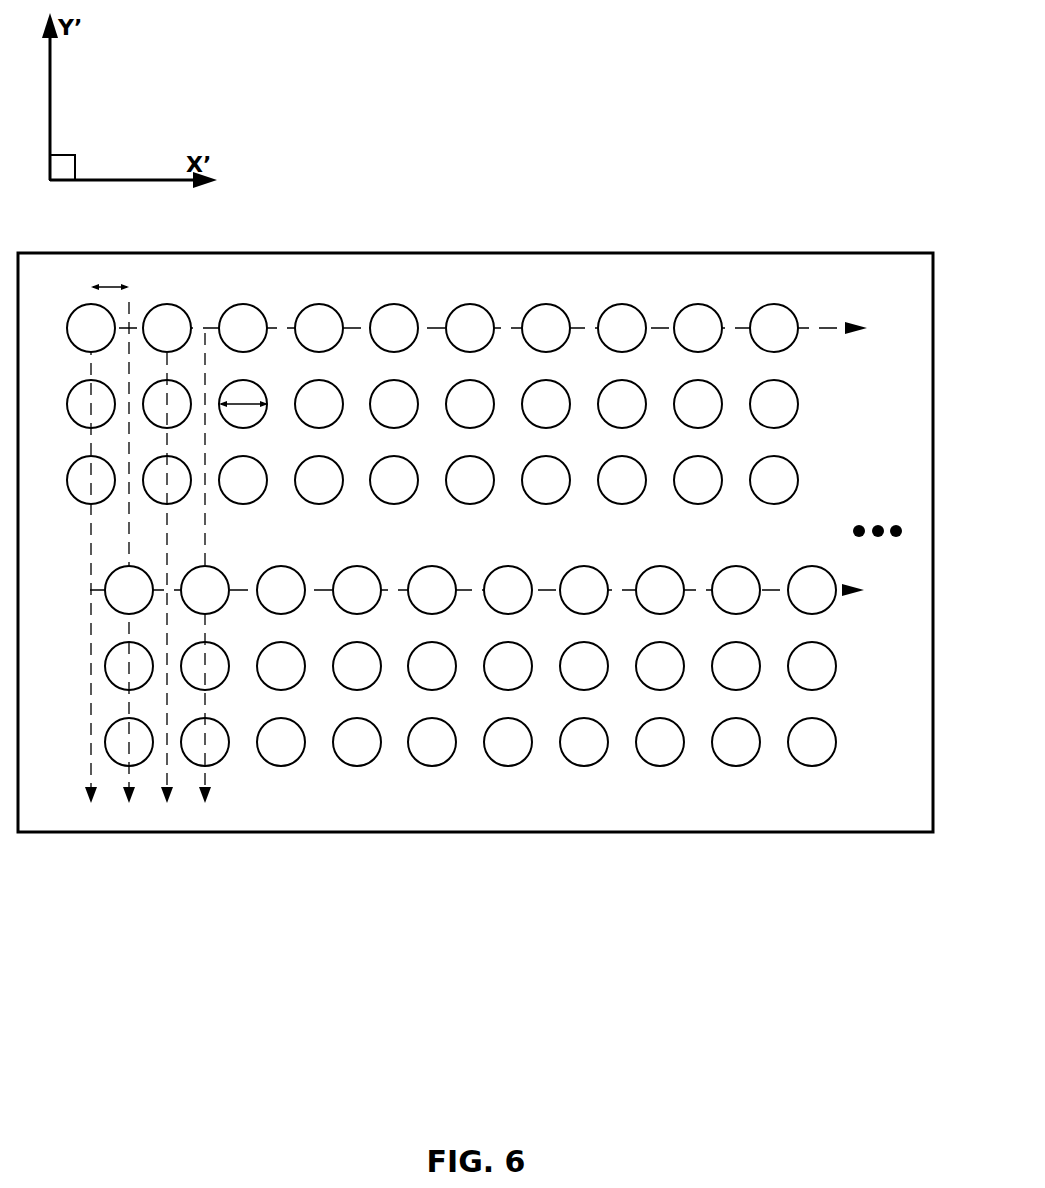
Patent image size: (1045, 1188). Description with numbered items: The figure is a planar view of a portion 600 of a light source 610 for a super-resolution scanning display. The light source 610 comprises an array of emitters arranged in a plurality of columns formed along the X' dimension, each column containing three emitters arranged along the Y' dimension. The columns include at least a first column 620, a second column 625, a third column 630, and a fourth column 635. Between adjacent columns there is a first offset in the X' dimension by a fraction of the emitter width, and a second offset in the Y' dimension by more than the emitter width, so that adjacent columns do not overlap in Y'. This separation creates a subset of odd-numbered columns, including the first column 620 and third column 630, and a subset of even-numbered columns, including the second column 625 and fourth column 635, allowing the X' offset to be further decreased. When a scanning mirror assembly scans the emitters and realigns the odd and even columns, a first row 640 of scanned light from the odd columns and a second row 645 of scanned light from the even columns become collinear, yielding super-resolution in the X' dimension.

The portion of a light source 600 is at (461, 119).
The light source 610 is at (837, 1097).
The first column 620 is at (91, 803).
The second column 625 is at (129, 803).
The third column 630 is at (167, 803).
The fourth column 635 is at (205, 803).
The first row 640 is at (867, 328).
The second row 645 is at (864, 591).